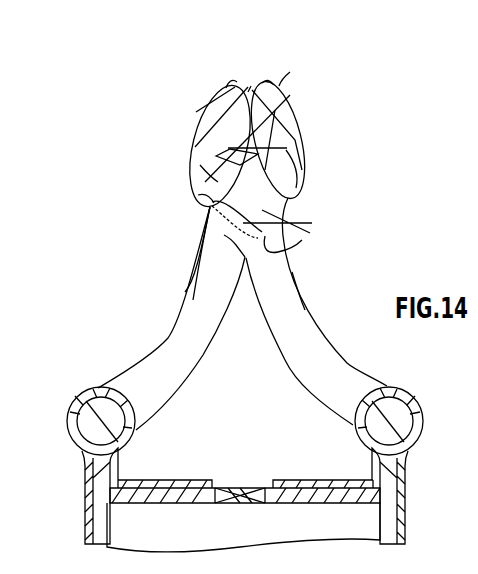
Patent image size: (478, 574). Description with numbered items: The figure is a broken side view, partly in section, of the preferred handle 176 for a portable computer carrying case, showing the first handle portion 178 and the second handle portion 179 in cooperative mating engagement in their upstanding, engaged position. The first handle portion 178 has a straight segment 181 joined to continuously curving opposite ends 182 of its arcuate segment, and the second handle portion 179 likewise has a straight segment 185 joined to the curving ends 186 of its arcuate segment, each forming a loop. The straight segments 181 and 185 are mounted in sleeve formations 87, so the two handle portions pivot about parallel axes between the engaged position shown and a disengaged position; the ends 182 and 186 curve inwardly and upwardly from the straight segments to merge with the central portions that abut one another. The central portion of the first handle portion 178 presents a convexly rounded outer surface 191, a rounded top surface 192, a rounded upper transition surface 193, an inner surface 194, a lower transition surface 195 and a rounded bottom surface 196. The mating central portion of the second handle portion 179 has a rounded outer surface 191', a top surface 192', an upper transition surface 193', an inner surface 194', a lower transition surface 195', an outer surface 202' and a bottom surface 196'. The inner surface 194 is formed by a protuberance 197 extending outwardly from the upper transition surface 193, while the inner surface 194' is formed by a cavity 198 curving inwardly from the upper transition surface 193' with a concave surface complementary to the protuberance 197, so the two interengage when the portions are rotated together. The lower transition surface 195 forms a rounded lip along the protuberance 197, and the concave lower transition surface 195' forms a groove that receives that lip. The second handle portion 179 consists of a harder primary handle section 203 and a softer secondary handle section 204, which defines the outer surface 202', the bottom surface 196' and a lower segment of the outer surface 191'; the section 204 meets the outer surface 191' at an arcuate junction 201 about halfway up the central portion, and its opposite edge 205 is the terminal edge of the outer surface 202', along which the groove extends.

The sleeve formations 87 is at (74, 446).
The handle 176 is at (200, 100).
The first handle portion 178 is at (112, 366).
The second handle portion 179 is at (345, 360).
The straight segment 181 is at (68, 410).
The ends of arcuate segment 182 is at (158, 393).
The straight segment 185 is at (402, 403).
The ends of arcuate segment 186 is at (328, 400).
The outer surface 191 is at (194, 145).
The outer surface 191' is at (309, 67).
The top surface 192 is at (222, 55).
The top surface 192' is at (260, 52).
The upper transition surface 193 is at (283, 57).
The upper transition surface 193' is at (231, 114).
The inner surface 194 is at (297, 140).
The inner surface 194' is at (191, 144).
The lower transition surface 195 is at (296, 218).
The lower transition surface 195' is at (168, 168).
The bottom surface 196 is at (162, 195).
The bottom surface 196' is at (311, 241).
The protuberance 197 is at (300, 157).
The cavity 198 is at (293, 128).
The junction 201 is at (297, 193).
The outer surface 202' is at (193, 239).
The primary handle section 203 is at (305, 317).
The secondary handle section 204 is at (185, 292).
The edge 205 is at (212, 205).